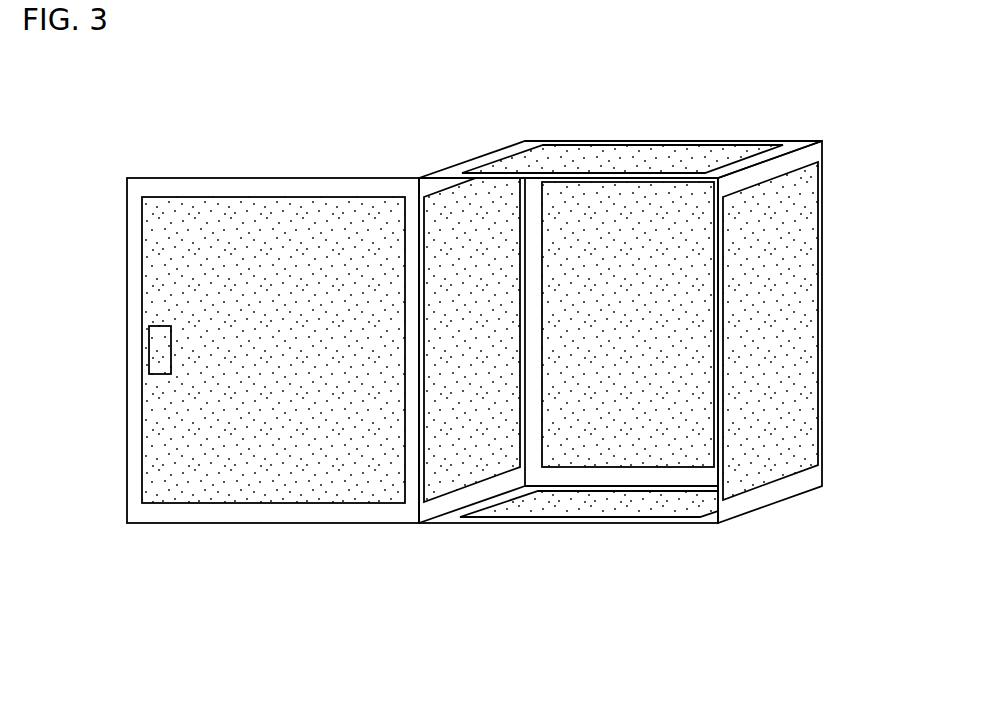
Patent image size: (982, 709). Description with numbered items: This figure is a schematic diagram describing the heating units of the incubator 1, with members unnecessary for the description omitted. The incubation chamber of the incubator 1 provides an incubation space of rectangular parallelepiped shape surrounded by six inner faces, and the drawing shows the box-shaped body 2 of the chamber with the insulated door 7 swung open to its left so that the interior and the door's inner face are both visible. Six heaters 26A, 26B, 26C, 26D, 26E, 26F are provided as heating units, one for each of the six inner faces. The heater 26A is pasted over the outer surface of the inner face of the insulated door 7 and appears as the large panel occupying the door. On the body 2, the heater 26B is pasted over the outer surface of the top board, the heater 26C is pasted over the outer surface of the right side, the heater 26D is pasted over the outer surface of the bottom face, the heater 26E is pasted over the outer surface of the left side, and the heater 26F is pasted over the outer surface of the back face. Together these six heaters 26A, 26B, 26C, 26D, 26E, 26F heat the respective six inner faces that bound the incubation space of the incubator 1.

The incubator 1 is at (490, 668).
The cabinet body 2 is at (575, 158).
The insulated door 7 is at (127, 290).
The heater 26A is at (260, 282).
The heater 26B is at (641, 160).
The heater 26C is at (782, 325).
The heater 26D is at (633, 498).
The heater 26E is at (473, 386).
The heater 26F is at (630, 383).